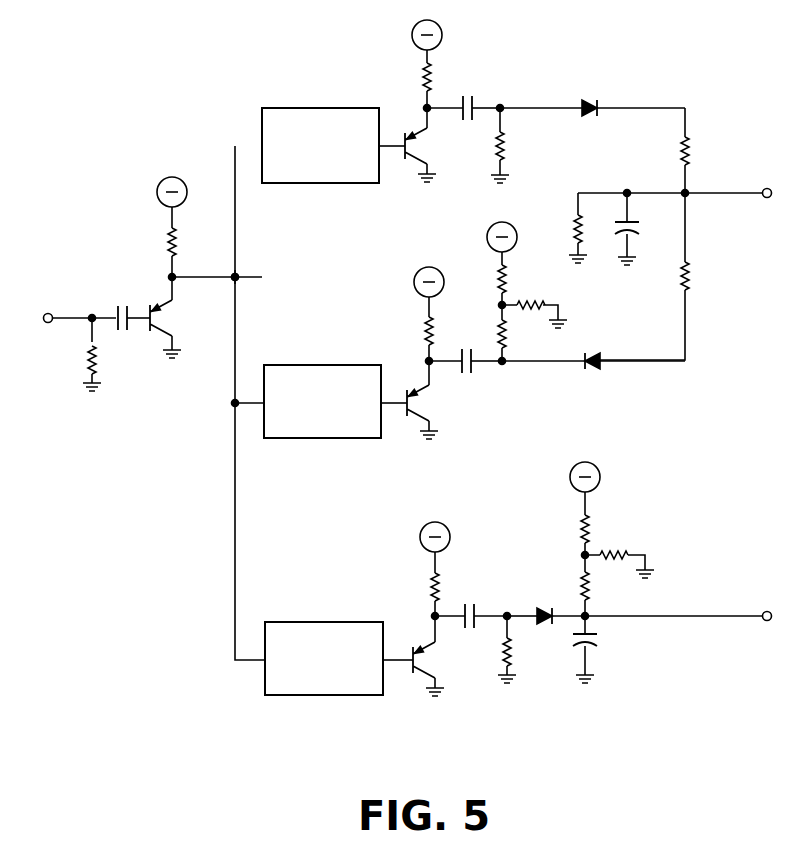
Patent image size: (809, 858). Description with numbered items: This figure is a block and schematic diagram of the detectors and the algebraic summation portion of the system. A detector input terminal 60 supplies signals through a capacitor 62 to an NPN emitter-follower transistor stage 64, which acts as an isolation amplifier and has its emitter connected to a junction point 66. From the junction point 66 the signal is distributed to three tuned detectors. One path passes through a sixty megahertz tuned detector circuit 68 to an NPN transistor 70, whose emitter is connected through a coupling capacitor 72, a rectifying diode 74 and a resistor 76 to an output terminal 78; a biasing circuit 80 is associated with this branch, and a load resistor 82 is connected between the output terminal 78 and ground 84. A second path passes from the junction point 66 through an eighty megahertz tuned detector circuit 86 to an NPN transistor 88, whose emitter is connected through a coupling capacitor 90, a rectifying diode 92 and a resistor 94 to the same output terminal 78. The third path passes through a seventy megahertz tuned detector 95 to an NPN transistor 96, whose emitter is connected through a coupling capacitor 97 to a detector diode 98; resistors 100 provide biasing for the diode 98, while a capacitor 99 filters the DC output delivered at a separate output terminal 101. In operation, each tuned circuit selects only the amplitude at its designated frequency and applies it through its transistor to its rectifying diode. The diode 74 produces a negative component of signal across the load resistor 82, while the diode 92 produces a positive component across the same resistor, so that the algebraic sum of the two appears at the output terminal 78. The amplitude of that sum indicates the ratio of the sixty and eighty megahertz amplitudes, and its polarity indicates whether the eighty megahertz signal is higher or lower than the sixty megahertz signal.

The detector input terminal 60 is at (48, 312).
The capacitor 62 is at (118, 306).
The NPN emitter-follower transistor stage 64 is at (170, 316).
The junction point 66 is at (239, 277).
The 60 megahertz tuned detector circuit 68 is at (322, 363).
The NPN transistor 70 is at (433, 399).
The coupling capacitor 72 is at (464, 349).
The rectifying diode 74 is at (591, 352).
The resistor 76 is at (689, 276).
The output terminal 78 is at (731, 189).
The biasing circuit 80 is at (520, 274).
The load resistor 82 is at (571, 227).
The ground 84 is at (633, 261).
The 80 megahertz tuned detector circuit 86 is at (323, 108).
The NPN transistor 88 is at (427, 144).
The coupling capacitor 90 is at (466, 97).
The rectifying diode 92 is at (591, 99).
The resistor 94 is at (681, 153).
The 70 megahertz tuned detector 95 is at (323, 619).
The NPN transistor 96 is at (430, 659).
The coupling capacitor 97 is at (465, 605).
The detector diode 98 is at (540, 608).
The capacitor 99 is at (598, 641).
The resistors 100 is at (614, 519).
The output terminal 101 is at (722, 616).